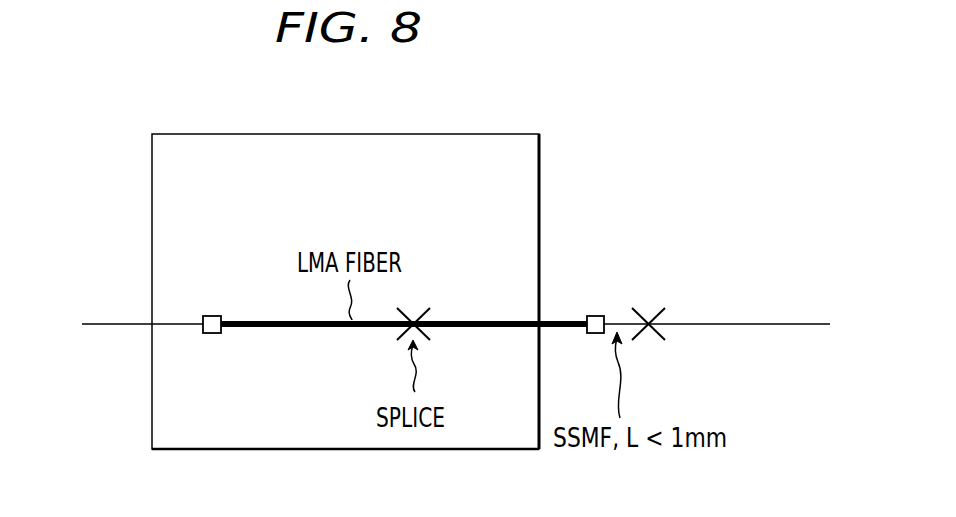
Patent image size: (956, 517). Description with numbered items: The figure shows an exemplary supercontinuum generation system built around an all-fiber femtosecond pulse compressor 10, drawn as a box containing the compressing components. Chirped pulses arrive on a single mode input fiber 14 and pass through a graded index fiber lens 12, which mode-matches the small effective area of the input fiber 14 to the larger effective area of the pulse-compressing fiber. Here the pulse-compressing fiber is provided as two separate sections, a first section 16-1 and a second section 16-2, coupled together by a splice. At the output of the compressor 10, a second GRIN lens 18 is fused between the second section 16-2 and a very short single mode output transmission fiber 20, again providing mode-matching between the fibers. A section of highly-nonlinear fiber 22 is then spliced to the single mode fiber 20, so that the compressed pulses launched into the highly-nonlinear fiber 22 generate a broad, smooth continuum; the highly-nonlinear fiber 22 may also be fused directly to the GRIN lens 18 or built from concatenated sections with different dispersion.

The all-fiber femtosecond pulse compressor 10 is at (470, 133).
The graded index (GRIN) fiber lens 12 is at (213, 316).
The input fiber 14 is at (101, 322).
The first section of pulse-compressing fiber 16-1 is at (268, 328).
The second section of pulse-compressing fiber 16-2 is at (490, 321).
The second GRIN lens 18 is at (593, 334).
The single mode output transmission fiber 20 is at (618, 321).
The highly-nonlinear fiber (HNLF) 22 is at (752, 323).